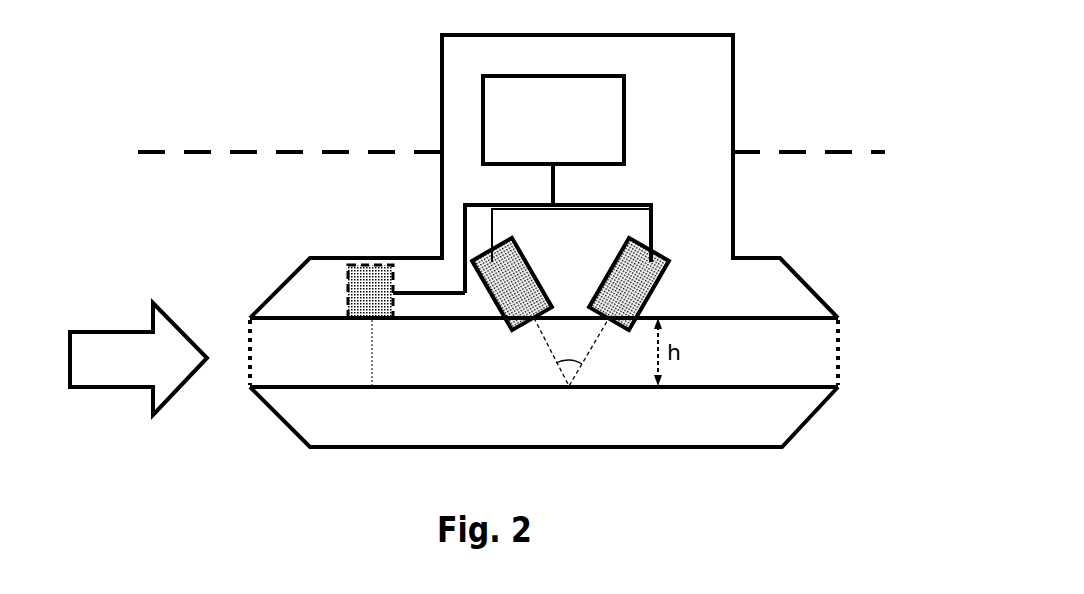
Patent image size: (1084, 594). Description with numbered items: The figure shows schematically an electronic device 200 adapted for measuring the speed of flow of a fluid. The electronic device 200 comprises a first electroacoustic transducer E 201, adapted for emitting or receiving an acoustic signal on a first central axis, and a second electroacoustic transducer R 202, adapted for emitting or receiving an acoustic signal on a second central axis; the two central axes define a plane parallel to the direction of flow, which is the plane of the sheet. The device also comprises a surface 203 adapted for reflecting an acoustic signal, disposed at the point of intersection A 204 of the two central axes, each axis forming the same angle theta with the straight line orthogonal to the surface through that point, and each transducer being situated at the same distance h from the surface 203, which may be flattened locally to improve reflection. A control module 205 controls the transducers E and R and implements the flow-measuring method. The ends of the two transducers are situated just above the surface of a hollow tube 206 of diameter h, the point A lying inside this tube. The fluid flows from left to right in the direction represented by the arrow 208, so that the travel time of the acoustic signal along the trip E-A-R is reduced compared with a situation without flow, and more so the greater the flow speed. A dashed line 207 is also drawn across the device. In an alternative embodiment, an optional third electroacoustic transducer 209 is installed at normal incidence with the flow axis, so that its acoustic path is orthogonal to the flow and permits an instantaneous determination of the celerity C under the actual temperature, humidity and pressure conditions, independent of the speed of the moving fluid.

The electronic device 200 is at (705, 245).
The first electroacoustic transducer E 201 is at (478, 273).
The second electroacoustic transducer R 202 is at (667, 258).
The surface 203 is at (550, 390).
The point of intersection A 204 is at (575, 388).
The control module 205 is at (483, 120).
The hollow tube 206 is at (765, 390).
The mounting plane 207 is at (157, 157).
The arrow 208 is at (107, 358).
The third electroacoustic transducer 209 is at (367, 302).